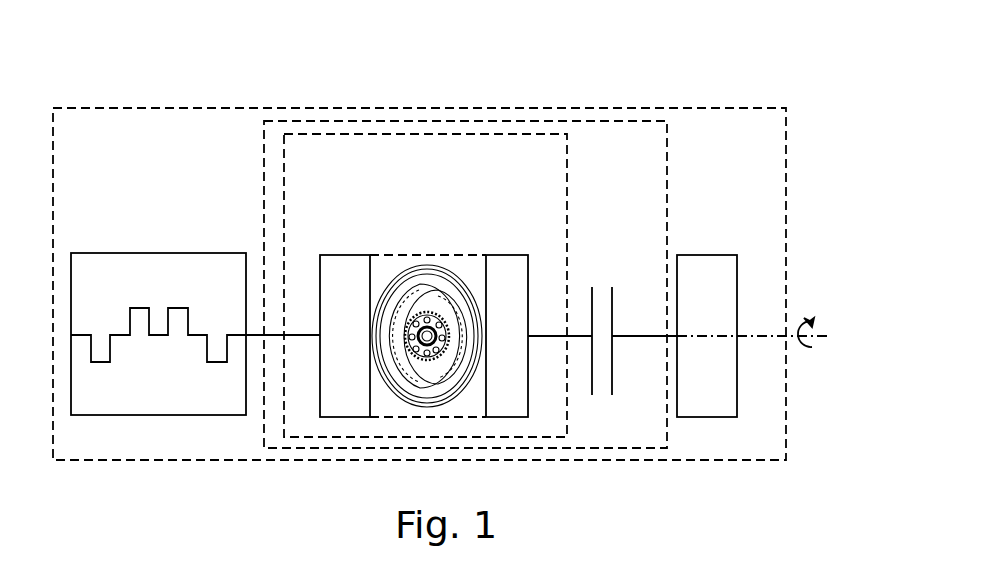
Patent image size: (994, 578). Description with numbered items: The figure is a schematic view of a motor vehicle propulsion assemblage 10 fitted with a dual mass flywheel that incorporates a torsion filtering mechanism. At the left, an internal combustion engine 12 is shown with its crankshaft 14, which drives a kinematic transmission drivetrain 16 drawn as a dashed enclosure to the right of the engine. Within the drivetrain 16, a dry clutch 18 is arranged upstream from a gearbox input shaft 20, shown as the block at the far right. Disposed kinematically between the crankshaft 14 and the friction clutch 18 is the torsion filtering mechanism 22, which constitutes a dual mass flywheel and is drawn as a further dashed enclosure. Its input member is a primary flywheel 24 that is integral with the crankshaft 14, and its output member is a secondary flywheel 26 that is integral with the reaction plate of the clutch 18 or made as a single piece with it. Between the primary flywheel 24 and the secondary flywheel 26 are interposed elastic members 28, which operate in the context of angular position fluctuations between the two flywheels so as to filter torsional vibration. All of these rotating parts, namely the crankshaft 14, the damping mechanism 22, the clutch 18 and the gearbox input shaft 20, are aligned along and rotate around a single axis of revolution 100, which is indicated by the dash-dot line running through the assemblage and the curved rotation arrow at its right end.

The motor vehicle propulsion assemblage 10 is at (107, 108).
The internal combustion engine 12 is at (163, 253).
The crankshaft 14 is at (130, 315).
The kinematic transmission drivetrain 16 is at (440, 121).
The dry clutch 18 is at (612, 308).
The gearbox input shaft 20 is at (703, 265).
The torsion filtering mechanism 22 is at (353, 133).
The primary flywheel 24 is at (345, 255).
The secondary flywheel 26 is at (486, 273).
The elastic members 28 is at (415, 283).
The axis of revolution 100 is at (820, 335).